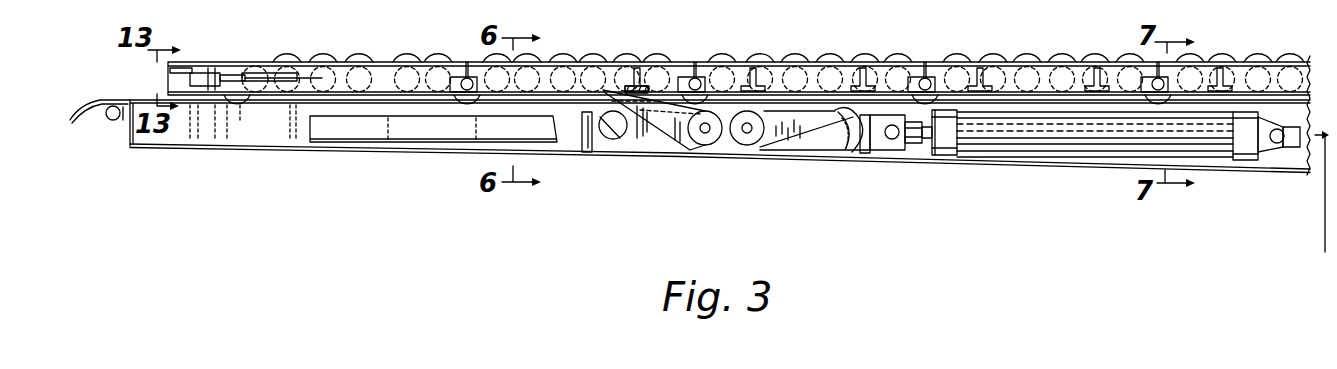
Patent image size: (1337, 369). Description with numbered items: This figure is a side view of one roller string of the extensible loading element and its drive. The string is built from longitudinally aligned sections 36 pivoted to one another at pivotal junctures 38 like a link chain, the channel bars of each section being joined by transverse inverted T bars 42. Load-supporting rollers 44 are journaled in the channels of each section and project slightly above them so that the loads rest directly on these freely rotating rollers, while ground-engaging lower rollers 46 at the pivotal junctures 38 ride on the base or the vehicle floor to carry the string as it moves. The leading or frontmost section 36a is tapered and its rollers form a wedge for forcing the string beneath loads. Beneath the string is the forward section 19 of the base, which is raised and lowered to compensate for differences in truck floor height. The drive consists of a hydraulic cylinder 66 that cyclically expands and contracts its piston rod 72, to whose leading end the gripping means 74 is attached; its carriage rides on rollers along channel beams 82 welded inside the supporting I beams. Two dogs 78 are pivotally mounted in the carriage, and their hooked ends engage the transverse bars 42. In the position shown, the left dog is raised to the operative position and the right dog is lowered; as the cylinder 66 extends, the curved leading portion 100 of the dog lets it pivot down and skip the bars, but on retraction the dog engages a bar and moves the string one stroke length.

The forward section 19 is at (240, 130).
The sections 36 is at (547, 58).
The frontmost section 36a is at (347, 62).
The pivotal junctures 38 is at (693, 72).
The transverse inverted T bars 42 is at (758, 74).
The load-supporting rollers 44 is at (1058, 54).
The lower rollers 46 is at (455, 66).
The hydraulic cylinders 66 is at (1012, 143).
The piston rods 72 is at (925, 150).
The gripping means 74 is at (813, 150).
The dogs 78 is at (690, 136).
The channel beams 82 is at (433, 128).
The curved leading portion 100 is at (608, 90).